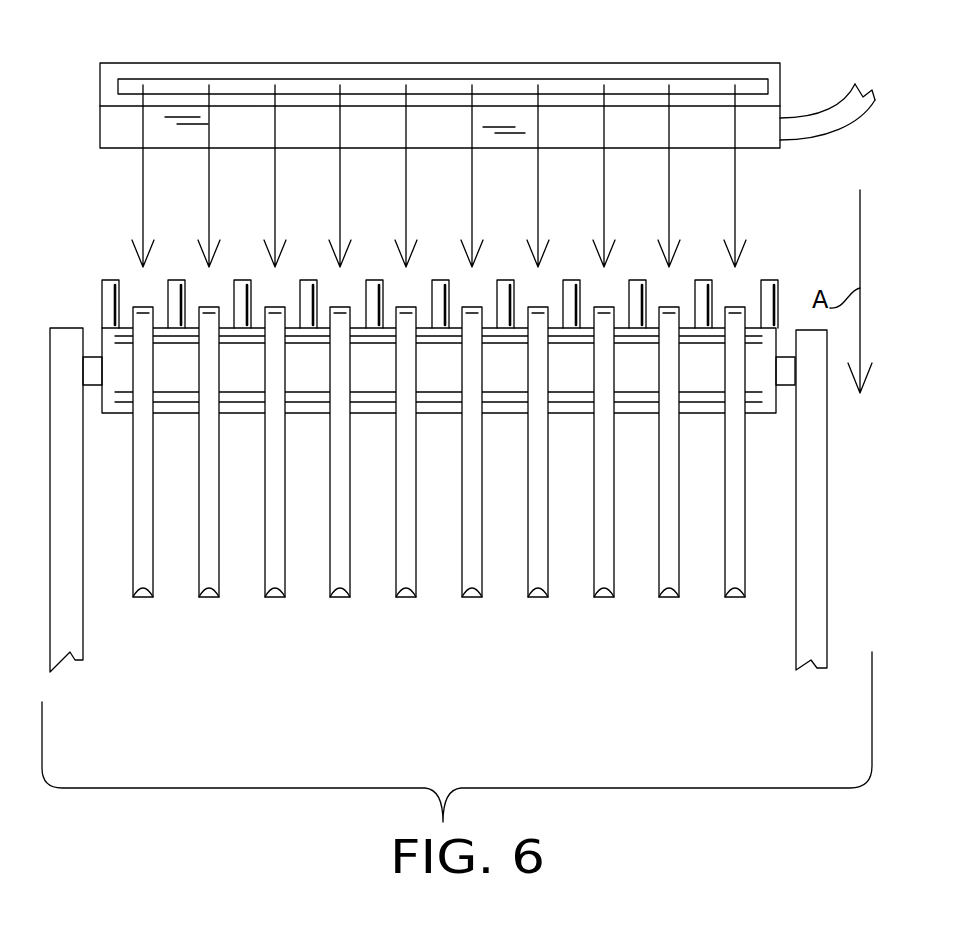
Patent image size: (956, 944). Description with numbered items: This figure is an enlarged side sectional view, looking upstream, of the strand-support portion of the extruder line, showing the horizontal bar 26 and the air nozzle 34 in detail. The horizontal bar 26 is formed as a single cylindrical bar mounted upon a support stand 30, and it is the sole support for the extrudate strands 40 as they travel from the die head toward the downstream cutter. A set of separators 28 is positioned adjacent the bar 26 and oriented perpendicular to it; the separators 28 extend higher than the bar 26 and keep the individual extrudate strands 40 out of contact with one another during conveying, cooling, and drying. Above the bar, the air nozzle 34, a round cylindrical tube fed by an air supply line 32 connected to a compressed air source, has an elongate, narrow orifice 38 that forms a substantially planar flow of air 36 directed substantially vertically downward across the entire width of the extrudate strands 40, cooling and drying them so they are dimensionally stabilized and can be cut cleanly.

The horizontal bar 26 is at (708, 385).
The separators 28 is at (777, 300).
The support stand 30 is at (83, 640).
The air supply line 32 is at (822, 132).
The air nozzle 34 is at (356, 63).
The flow of air 36 is at (142, 202).
The orifice 38 is at (625, 88).
The extrudate strands 40 is at (413, 590).